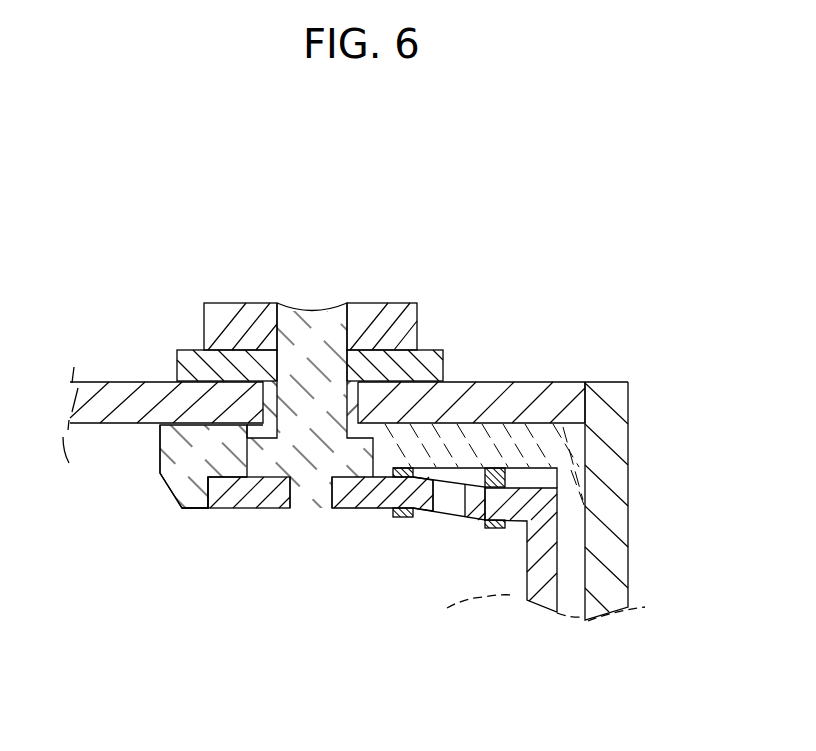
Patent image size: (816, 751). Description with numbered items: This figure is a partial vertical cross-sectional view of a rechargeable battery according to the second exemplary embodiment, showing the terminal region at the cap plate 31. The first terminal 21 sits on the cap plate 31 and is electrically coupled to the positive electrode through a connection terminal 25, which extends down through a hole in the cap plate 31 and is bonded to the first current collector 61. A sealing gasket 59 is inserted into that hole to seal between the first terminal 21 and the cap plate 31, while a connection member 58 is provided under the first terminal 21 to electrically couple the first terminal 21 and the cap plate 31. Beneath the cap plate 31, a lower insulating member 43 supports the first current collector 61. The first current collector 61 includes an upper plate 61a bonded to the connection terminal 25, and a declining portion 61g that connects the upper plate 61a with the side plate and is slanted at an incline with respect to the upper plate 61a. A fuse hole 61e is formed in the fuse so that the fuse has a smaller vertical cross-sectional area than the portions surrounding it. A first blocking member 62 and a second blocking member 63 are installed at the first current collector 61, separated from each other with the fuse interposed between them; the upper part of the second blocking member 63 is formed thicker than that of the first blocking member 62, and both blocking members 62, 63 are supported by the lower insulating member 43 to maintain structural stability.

The first terminal 21 is at (378, 325).
The connection terminal 25 is at (305, 330).
The cap plate 31 is at (552, 398).
The lower insulating member 43 is at (562, 452).
The connection member 58 is at (432, 367).
The sealing gasket 59 is at (263, 407).
The first current collector 61 is at (560, 552).
The upper plate 61a is at (240, 492).
The fuse hole 61e is at (447, 503).
The declining portion 61g is at (473, 503).
The first blocking member 62 is at (402, 520).
The second blocking member 63 is at (495, 528).